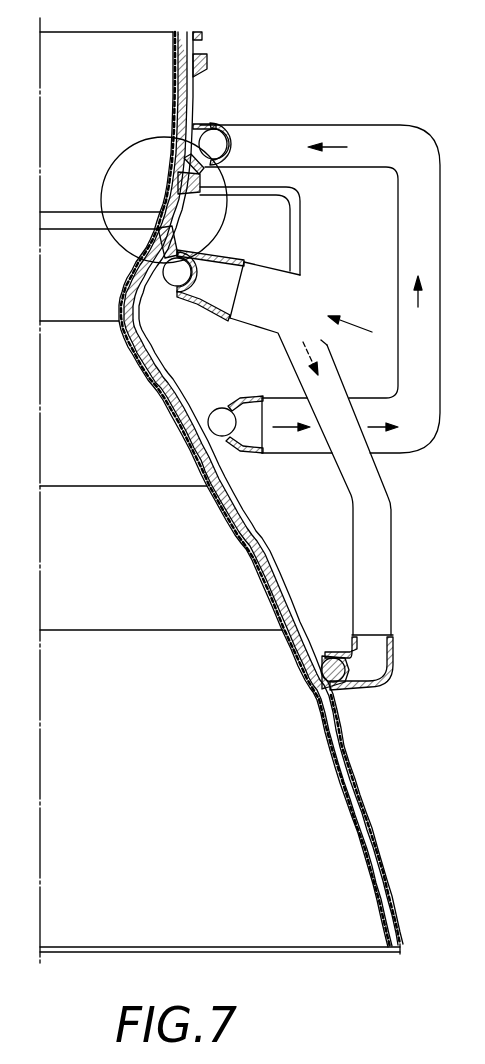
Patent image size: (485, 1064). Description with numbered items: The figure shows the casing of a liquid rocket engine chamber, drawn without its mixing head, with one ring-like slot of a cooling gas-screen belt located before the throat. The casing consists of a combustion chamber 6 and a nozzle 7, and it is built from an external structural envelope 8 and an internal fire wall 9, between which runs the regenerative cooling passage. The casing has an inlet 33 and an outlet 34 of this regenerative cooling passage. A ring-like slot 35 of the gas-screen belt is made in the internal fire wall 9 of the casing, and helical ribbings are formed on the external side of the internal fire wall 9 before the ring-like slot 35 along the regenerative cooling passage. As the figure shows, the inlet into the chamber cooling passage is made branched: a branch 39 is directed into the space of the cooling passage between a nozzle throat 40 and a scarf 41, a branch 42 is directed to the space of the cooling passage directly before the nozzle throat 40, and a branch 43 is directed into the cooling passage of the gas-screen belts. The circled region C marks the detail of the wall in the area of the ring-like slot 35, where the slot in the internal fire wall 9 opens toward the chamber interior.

The combustion chamber 6 is at (193, 103).
The nozzle 7 is at (253, 540).
The external structural envelope 8 is at (162, 375).
The internal fire wall 9 is at (175, 168).
The inlet 33 is at (337, 297).
The outlet 34 is at (173, 68).
The ring-like slot 35 is at (68, 211).
The branch 39 is at (380, 600).
The nozzle throat 40 is at (92, 322).
The scarf 41 is at (320, 952).
The branch 42 is at (262, 273).
The branch 43 is at (293, 195).
The detail region C is at (112, 246).